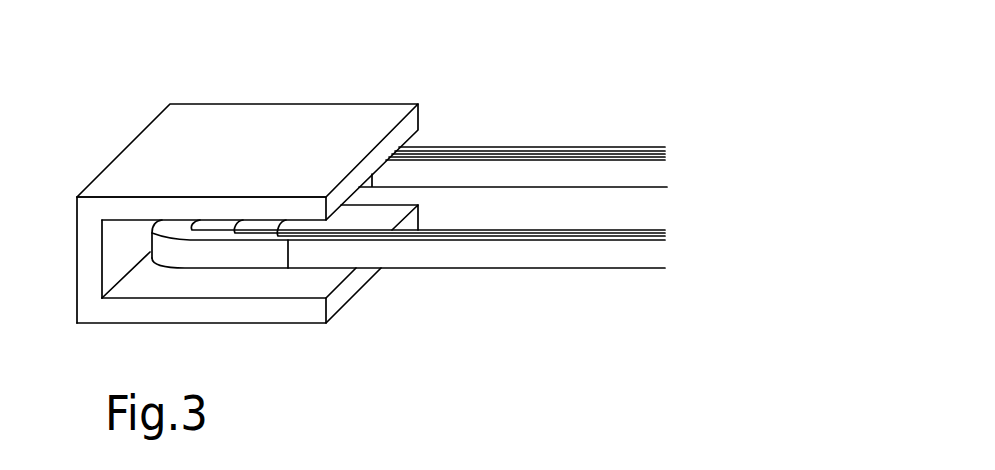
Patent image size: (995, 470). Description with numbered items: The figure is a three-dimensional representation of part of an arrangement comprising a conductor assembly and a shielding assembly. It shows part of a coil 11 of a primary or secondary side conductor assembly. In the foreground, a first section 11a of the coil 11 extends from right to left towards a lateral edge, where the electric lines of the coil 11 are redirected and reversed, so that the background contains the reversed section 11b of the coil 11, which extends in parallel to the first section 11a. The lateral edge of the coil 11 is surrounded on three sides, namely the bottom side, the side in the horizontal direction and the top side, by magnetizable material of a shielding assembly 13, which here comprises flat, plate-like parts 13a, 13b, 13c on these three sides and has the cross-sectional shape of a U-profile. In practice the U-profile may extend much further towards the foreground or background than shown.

The coil 11 is at (577, 108).
The first section 11a is at (530, 268).
The reversed section 11b is at (465, 148).
The shielding assembly 13 is at (112, 120).
The flat plate-like part 13a is at (272, 110).
The flat plate-like part 13b is at (77, 249).
The flat plate-like part 13c is at (207, 323).